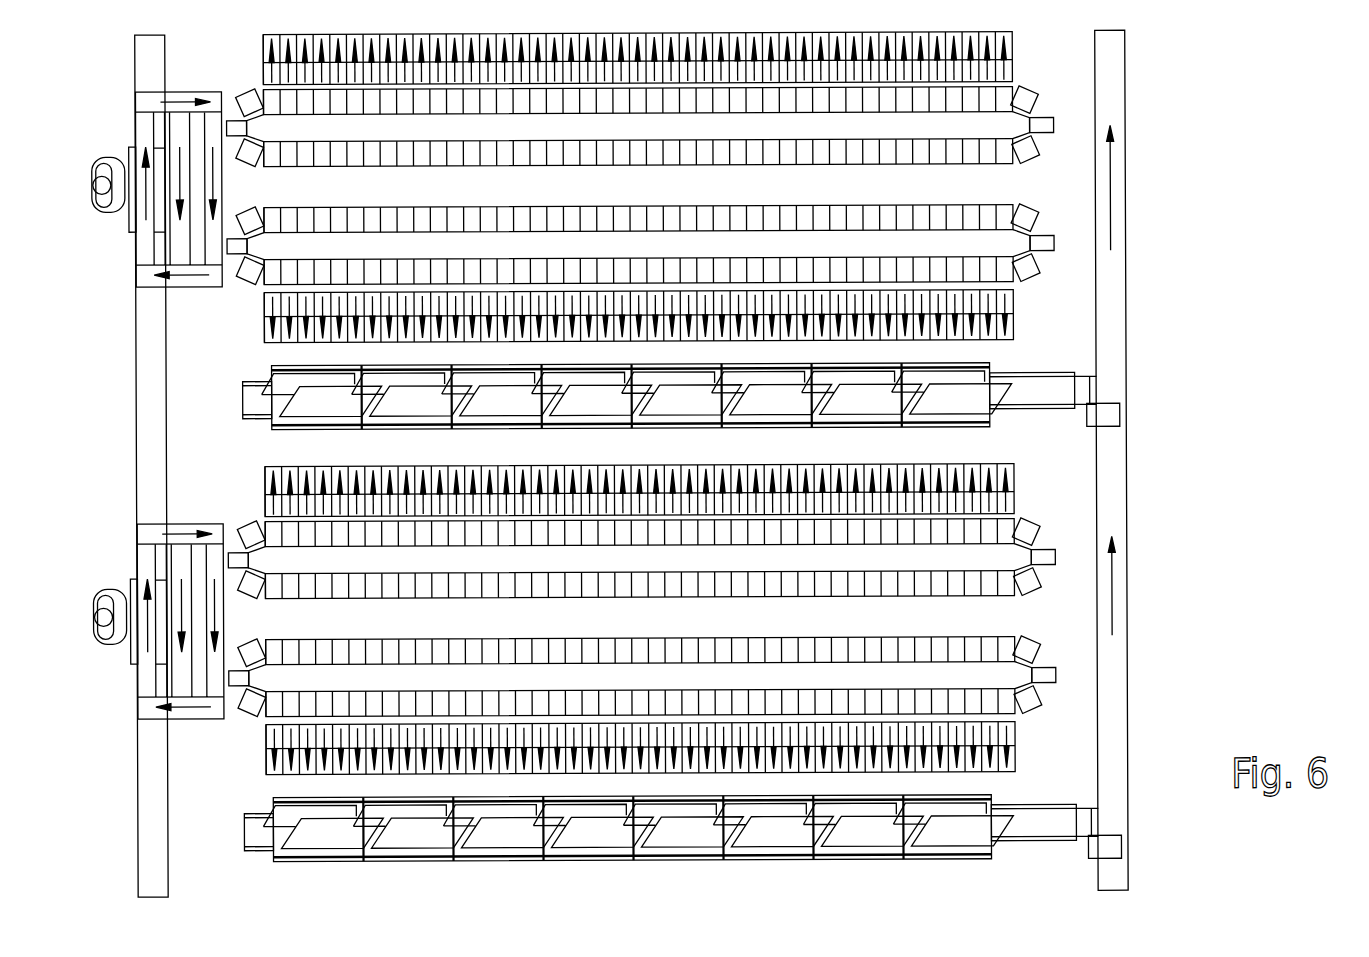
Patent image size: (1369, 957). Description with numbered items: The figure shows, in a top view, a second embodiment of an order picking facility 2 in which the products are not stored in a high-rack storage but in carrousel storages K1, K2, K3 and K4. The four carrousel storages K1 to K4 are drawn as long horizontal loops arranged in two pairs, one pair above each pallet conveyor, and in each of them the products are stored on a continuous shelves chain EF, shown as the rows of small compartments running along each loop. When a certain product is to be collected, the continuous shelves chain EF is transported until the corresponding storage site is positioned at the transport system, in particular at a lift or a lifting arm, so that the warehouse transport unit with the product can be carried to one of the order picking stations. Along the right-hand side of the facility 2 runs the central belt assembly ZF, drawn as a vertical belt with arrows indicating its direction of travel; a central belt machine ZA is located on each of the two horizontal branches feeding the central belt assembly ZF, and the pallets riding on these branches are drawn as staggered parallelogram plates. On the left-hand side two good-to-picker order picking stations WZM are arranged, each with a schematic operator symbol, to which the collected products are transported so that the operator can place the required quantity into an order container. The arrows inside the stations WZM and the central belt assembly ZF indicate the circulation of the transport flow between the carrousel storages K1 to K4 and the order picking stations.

The order picking facility 2 is at (1185, 152).
The good-to-picker order picking station WZM is at (178, 92).
The continuous shelves chain EF is at (1002, 103).
The carrousel storage K1 is at (658, 113).
The carrousel storage K2 is at (1041, 287).
The carrousel storage K3 is at (1052, 578).
The carrousel storage K4 is at (1035, 715).
The central belt assembly ZF is at (1132, 392).
The central belt machine ZA is at (965, 400).